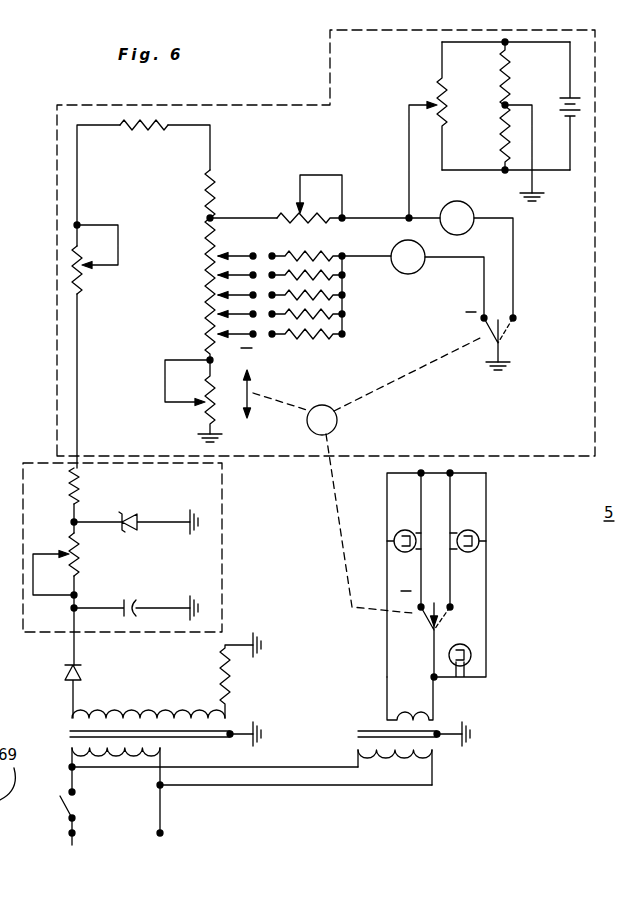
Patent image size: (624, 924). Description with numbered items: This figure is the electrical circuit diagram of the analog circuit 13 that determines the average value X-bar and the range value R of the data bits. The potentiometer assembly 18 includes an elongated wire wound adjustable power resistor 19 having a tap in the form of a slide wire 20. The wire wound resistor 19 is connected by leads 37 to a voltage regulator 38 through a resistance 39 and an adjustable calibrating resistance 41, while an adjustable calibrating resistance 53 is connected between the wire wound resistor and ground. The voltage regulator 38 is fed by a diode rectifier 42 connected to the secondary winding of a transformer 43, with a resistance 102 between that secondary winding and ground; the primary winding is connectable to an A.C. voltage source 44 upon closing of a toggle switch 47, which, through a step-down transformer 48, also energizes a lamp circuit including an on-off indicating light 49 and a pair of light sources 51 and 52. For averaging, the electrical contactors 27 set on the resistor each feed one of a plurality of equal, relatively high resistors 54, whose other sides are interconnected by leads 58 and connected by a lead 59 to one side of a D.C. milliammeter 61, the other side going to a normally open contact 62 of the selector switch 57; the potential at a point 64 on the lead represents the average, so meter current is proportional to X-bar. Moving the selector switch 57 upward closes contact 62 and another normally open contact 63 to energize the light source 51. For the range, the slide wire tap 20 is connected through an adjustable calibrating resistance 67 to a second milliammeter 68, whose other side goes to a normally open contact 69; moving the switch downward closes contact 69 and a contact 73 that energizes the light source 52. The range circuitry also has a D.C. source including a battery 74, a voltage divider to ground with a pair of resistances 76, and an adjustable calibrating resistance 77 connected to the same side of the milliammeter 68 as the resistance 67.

The analog circuit 13 is at (57, 152).
The potentiometer assembly 18 is at (194, 230).
The wire wound resistor 19 is at (208, 277).
The slide wire tap 20 is at (214, 216).
The electrical contactors 27 is at (212, 260).
The leads 37 is at (210, 160).
The voltage regulator 38 is at (222, 505).
The resistance 39 is at (163, 123).
The adjustable calibrating resistance 41 is at (82, 280).
The diode rectifier 42 is at (84, 672).
The transformer 43 is at (70, 728).
The A.C. voltage source 44 is at (150, 838).
The toggle switch 47 is at (68, 806).
The step-down transformer 48 is at (436, 752).
The on-off indicating light 49 is at (472, 656).
The light source 51 is at (392, 541).
The light source 52 is at (480, 541).
The adjustable calibrating resistance 53 is at (205, 424).
The resistors 54 is at (302, 238).
The selector switch 57 is at (337, 420).
The leads 58 is at (346, 275).
The lead 59 is at (380, 248).
The D.C. milliammeter 61 is at (408, 274).
The normally open contact 62 is at (484, 331).
The normally open contact 63 is at (416, 611).
The point 64 is at (344, 254).
The adjustable calibrating resistance 67 is at (300, 206).
The second milliammeter 68 is at (458, 203).
The normally open contact 69 is at (515, 320).
The normally open contact 73 is at (456, 610).
The battery 74 is at (580, 100).
The resistances 76 is at (500, 110).
The adjustable calibrating resistance 77 is at (448, 116).
The resistance 102 is at (230, 686).